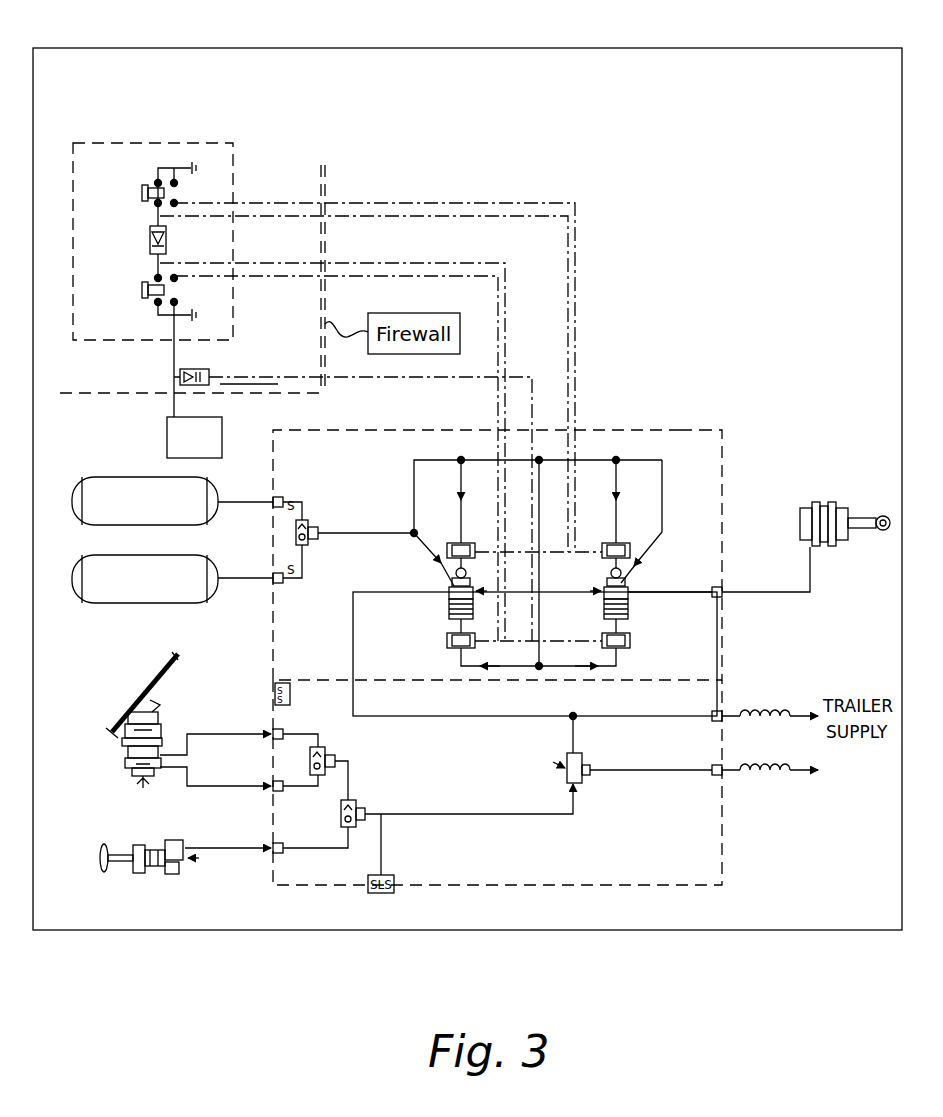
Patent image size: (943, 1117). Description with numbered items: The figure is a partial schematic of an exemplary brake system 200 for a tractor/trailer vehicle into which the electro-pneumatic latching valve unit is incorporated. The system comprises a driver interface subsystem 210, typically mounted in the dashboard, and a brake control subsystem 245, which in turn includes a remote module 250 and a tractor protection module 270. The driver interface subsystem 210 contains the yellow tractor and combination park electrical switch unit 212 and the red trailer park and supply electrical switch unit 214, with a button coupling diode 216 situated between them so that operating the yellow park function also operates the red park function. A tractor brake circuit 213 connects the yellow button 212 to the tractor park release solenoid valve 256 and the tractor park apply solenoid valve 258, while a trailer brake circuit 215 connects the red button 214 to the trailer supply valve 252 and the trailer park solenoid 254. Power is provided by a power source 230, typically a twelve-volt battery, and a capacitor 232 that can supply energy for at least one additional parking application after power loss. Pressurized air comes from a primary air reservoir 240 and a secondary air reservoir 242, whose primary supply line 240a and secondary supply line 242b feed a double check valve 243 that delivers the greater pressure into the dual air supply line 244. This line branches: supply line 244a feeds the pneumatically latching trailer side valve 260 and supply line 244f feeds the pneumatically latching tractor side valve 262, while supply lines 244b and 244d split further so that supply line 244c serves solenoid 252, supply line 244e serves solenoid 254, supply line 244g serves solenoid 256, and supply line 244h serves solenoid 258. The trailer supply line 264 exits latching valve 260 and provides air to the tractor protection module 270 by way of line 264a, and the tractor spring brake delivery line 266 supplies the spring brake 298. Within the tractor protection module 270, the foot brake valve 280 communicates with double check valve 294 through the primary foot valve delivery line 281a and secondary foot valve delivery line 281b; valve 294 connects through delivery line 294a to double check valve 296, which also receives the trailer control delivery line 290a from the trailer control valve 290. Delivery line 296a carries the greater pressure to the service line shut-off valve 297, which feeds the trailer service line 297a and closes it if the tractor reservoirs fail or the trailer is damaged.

The brake system 200 is at (281, 46).
The driver interface subsystem 210 is at (200, 140).
The tractor and combination park electrical switch unit 212 is at (150, 198).
The tractor brake circuit 213 is at (244, 202).
The trailer park and supply electrical switch unit 214 is at (152, 300).
The trailer brake circuit 215 is at (300, 278).
The button coupling diode 216 is at (150, 252).
The power source 230 is at (167, 437).
The capacitor 232 is at (180, 378).
The primary air reservoir 240 is at (74, 522).
The primary supply line 240a is at (228, 505).
The secondary air reservoir 242 is at (74, 600).
The secondary supply line 242b is at (270, 584).
The double check valve 243 is at (309, 522).
The dual air supply line 244 is at (396, 532).
The supply line 244a is at (428, 550).
The supply line 244b is at (434, 458).
The supply line 244c is at (460, 470).
The supply line 244d is at (541, 478).
The supply line 244e is at (498, 670).
The supply line 244f is at (663, 456).
The supply line 244g is at (618, 510).
The supply line 244h is at (592, 670).
The brake control subsystem 245 is at (687, 426).
The remote module 250 is at (724, 440).
The trailer supply valve 252 is at (445, 578).
The trailer park solenoid 254 is at (447, 645).
The tractor park release solenoid valve 256 is at (634, 550).
The tractor park apply solenoid valve 258 is at (633, 642).
The pneumatically latching trailer side valve 260 is at (448, 630).
The pneumatically latching tractor side valve 262 is at (640, 592).
The trailer supply line 264 is at (352, 650).
The line 264a is at (578, 732).
The tractor spring brake delivery line 266 is at (795, 594).
The tractor protection module 270 is at (722, 868).
The foot brake valve 280 is at (123, 756).
The primary foot valve delivery line 281a is at (252, 731).
The secondary foot valve delivery line 281b is at (250, 784).
The trailer control valve 290 is at (130, 843).
The trailer control delivery line 290a is at (252, 850).
The double check valve 294 is at (327, 752).
The delivery line 294a is at (357, 800).
The double check valve 296 is at (358, 808).
The delivery line 296a is at (462, 816).
The service line shut-off valve 297 is at (565, 774).
The trailer service line 297a is at (700, 773).
The spring brake 298 is at (849, 546).